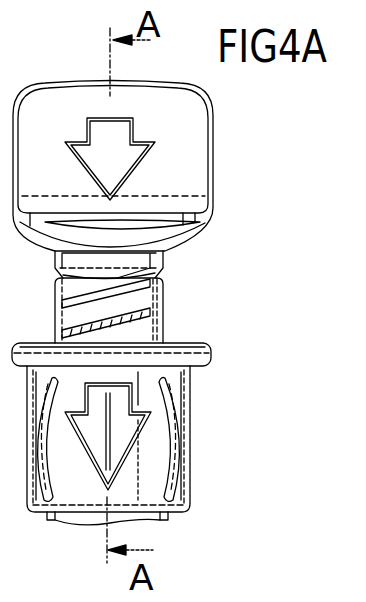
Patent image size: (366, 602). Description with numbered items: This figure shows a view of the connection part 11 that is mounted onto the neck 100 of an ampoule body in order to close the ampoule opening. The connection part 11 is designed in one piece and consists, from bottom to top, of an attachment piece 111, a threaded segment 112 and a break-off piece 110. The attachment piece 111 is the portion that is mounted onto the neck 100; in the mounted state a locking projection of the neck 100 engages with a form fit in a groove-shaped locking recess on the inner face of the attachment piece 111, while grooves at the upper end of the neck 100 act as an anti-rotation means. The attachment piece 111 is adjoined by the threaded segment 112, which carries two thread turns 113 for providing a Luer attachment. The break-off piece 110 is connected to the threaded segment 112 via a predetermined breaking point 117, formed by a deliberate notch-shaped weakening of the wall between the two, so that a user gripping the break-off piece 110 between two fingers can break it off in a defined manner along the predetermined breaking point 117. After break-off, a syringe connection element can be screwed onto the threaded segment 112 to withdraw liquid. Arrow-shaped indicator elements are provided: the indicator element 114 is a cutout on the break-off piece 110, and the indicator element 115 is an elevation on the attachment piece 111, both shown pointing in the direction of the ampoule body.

The neck 100 is at (152, 517).
The connection part 11 is at (205, 297).
The break-off piece 110 is at (187, 160).
The attachment piece 111 is at (191, 493).
The threaded segment 112 is at (144, 302).
The thread turns 113 is at (163, 298).
The indicator element 114 is at (137, 153).
The indicator element 115 is at (101, 463).
The predetermined breaking point 117 is at (164, 256).